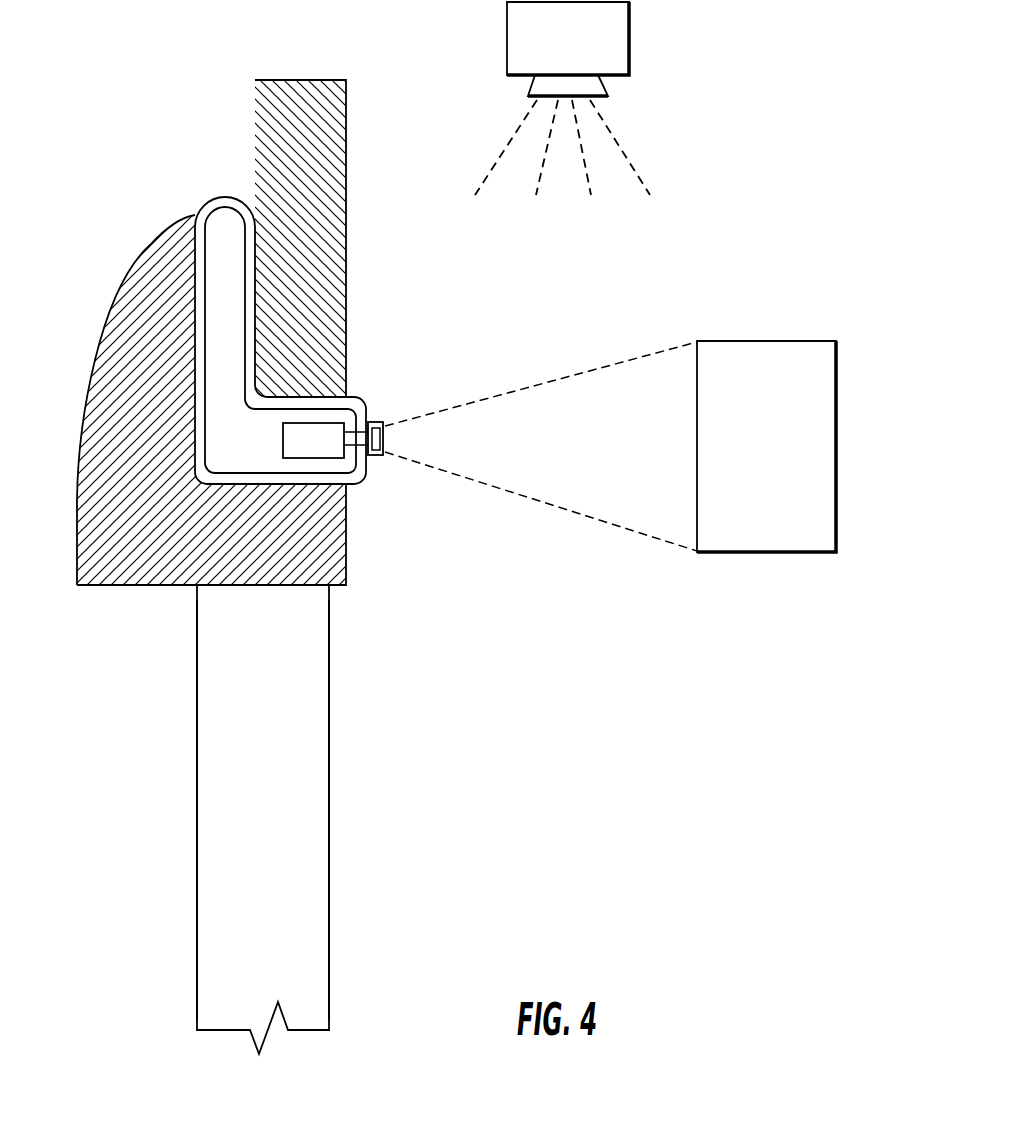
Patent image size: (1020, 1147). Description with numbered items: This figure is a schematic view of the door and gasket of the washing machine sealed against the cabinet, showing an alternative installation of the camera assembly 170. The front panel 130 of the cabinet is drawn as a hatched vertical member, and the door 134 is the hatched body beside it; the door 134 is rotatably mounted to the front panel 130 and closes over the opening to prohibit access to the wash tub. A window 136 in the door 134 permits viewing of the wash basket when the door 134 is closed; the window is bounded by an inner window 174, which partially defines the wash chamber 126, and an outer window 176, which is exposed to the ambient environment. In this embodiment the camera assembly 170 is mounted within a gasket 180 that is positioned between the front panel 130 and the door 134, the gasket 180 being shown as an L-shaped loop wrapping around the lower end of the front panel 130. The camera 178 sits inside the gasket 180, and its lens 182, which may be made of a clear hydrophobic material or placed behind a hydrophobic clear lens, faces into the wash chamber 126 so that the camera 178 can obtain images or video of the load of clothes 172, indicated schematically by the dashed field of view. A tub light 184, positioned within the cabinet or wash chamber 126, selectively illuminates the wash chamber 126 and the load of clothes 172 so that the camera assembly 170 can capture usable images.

The wash chamber 126 is at (441, 760).
The front panel 130 is at (346, 143).
The door 134 is at (100, 350).
The window 136 is at (242, 760).
The camera assembly 170 is at (403, 388).
The load of clothes 172 is at (749, 450).
The inner window 174 is at (329, 692).
The outer window 176 is at (197, 710).
The camera 178 is at (325, 440).
The gasket 180 is at (352, 400).
The lens 182 is at (384, 435).
The tub light 184 is at (551, 53).